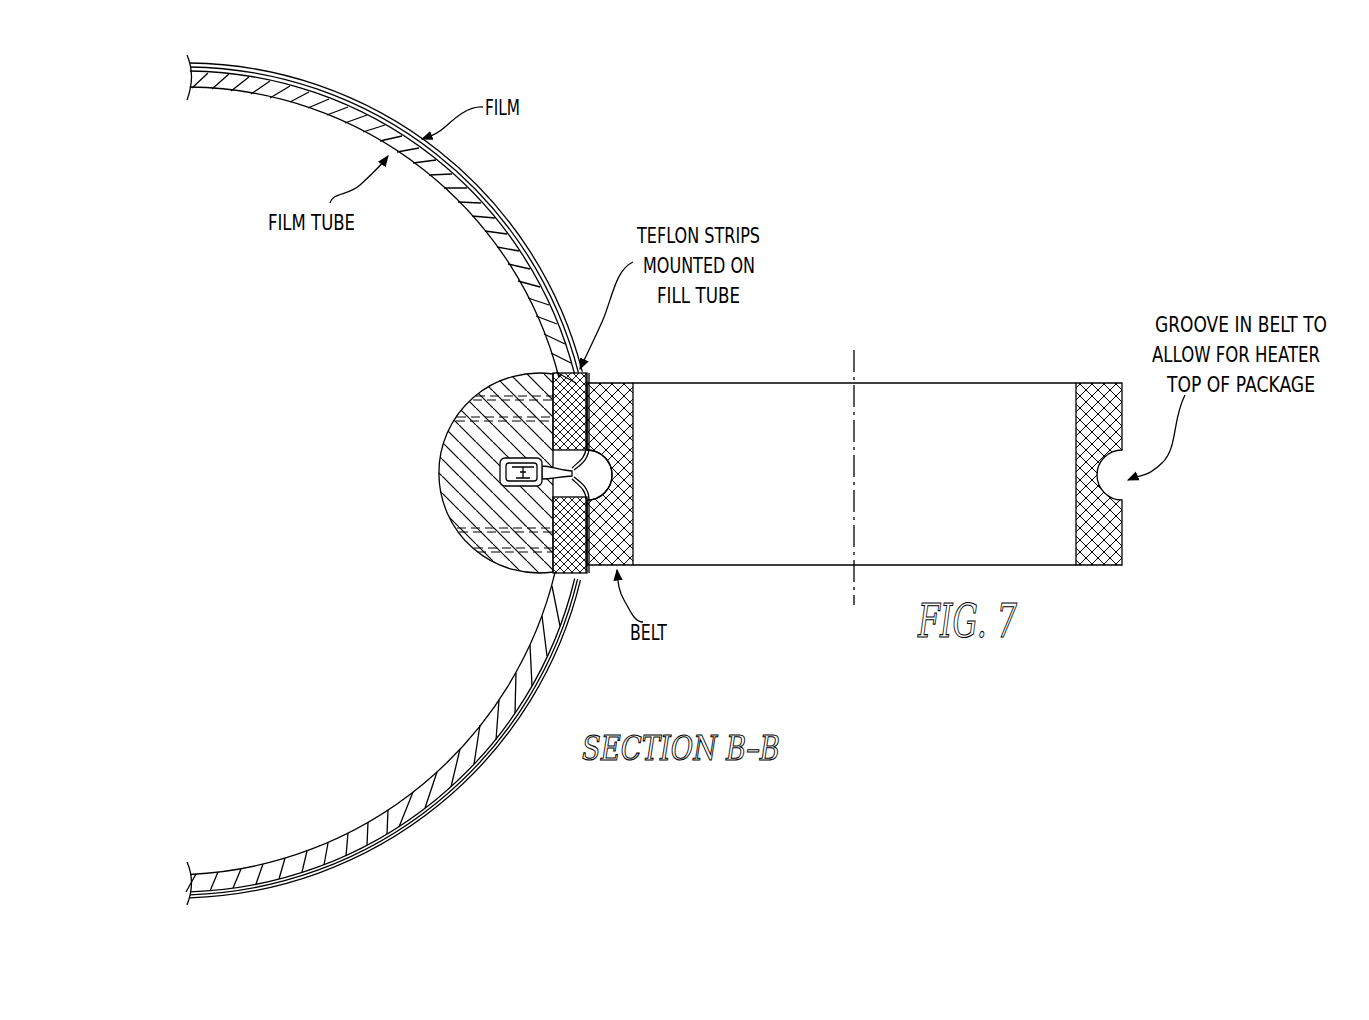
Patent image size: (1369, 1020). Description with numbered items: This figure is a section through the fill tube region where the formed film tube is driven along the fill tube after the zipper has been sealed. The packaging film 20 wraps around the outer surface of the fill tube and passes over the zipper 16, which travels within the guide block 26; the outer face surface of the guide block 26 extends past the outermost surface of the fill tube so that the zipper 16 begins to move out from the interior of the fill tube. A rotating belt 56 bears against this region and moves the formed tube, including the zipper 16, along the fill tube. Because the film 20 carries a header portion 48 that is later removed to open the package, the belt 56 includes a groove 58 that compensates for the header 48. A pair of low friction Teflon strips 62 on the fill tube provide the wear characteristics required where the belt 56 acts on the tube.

The zipper 16 is at (500, 472).
The packaging film 20 is at (480, 199).
The guide block 26 is at (450, 437).
The header portion 48 is at (620, 461).
The rotating belt 56 is at (634, 406).
The groove 58 is at (1076, 475).
The low friction strips 62 is at (555, 376).